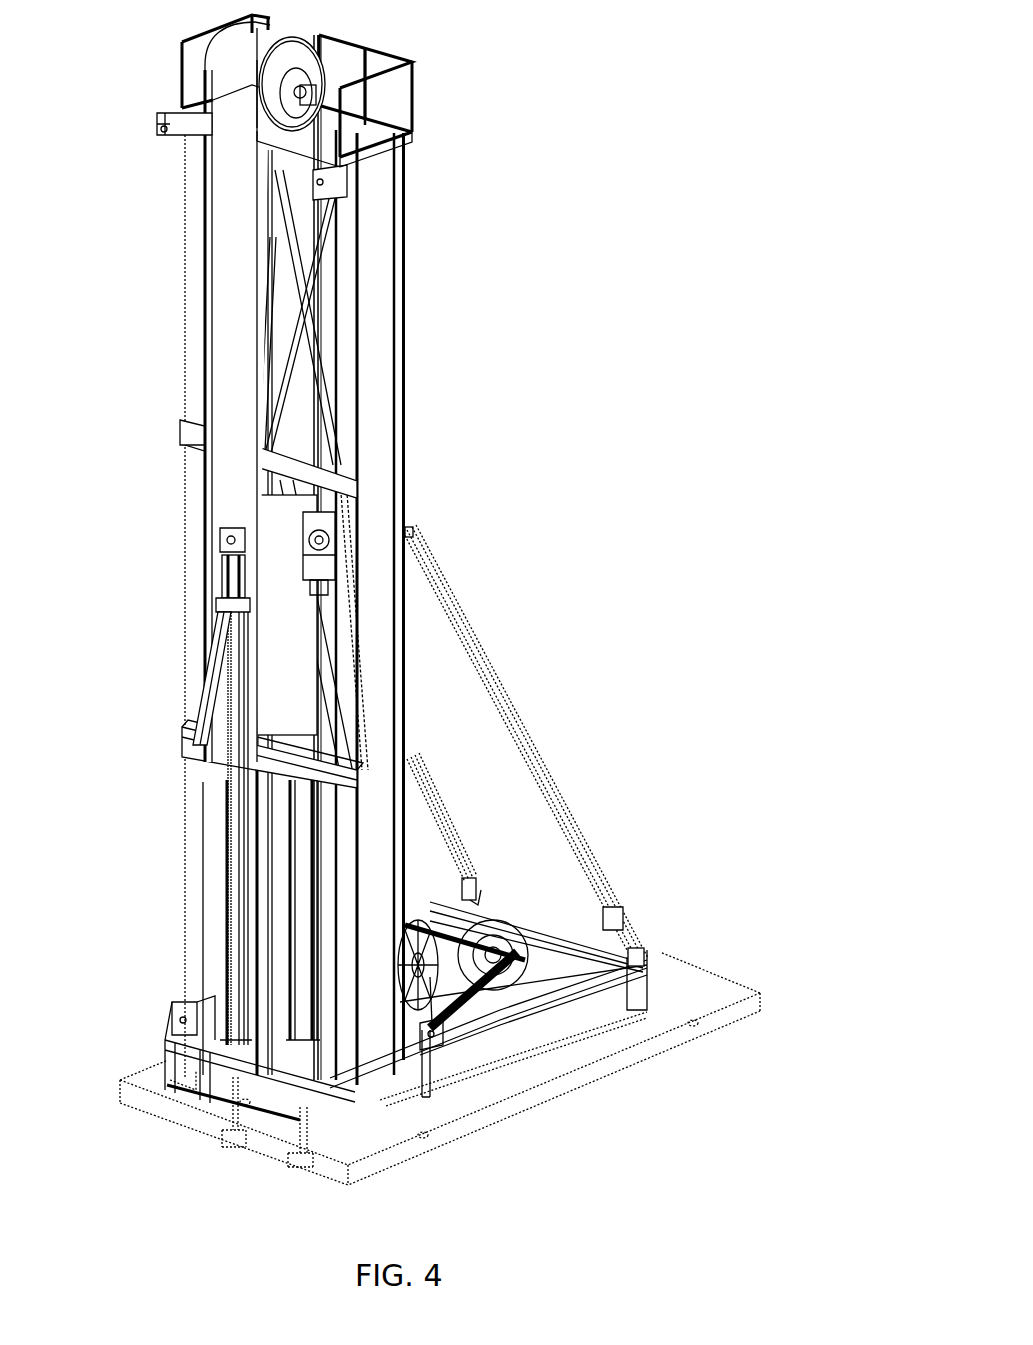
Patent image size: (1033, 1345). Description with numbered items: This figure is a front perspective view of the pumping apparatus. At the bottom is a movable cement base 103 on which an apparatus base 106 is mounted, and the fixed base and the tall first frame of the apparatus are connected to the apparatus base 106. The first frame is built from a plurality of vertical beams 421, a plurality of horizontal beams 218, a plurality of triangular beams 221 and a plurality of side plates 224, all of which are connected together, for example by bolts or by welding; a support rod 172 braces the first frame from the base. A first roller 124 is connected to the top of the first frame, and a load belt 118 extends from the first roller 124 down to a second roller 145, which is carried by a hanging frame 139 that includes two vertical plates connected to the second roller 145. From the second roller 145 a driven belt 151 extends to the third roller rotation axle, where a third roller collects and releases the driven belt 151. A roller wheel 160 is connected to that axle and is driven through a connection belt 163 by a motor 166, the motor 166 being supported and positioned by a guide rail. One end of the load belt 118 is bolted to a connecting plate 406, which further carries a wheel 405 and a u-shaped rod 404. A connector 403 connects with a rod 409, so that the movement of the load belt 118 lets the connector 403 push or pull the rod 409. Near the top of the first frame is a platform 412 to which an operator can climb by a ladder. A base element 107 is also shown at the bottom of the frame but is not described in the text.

The movable cement base 103 is at (677, 973).
The apparatus base 106 is at (620, 993).
The base frame 107 is at (313, 1040).
The load belt 118 is at (232, 397).
The first roller 124 is at (205, 44).
The hanging frame 139 is at (317, 512).
The second roller 145 is at (320, 548).
The driven belt 151 is at (275, 692).
The roller wheel 160 is at (500, 1010).
The connection belt 163 is at (443, 1027).
The motor 166 is at (455, 912).
The support rod 172 is at (453, 612).
The horizontal beams 218 is at (283, 362).
The triangular beams 221 is at (327, 290).
The side plates 224 is at (185, 258).
The connector 403 is at (213, 607).
The u-shaped rod 404 is at (217, 577).
The wheel 405 is at (217, 567).
The connecting plate 406 is at (232, 535).
The rod 409 is at (230, 883).
The platform 412 is at (383, 103).
The vertical beams 421 is at (426, 1100).